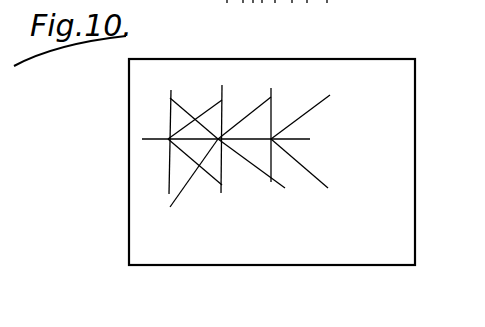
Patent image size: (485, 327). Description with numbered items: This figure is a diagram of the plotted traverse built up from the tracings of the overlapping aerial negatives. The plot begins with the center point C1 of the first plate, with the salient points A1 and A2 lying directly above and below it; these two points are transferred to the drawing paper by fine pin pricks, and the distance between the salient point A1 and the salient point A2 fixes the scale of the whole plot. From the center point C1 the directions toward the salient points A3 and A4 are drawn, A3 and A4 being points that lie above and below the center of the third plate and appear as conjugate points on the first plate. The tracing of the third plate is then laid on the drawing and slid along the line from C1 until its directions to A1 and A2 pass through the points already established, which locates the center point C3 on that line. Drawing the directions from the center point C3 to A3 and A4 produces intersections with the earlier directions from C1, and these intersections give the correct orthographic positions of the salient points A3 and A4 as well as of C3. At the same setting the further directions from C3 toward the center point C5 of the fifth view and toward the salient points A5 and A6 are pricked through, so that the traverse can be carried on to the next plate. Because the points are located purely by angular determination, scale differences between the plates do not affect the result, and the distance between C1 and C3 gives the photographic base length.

The salient point A1 is at (171, 99).
The center point C1 is at (167, 140).
The salient point A2 is at (168, 183).
The salient point A3 is at (222, 100).
The center point C3 is at (186, 187).
The salient point A4 is at (222, 181).
The salient point A5 is at (271, 98).
The center point C5 is at (271, 139).
The salient point A6 is at (272, 182).